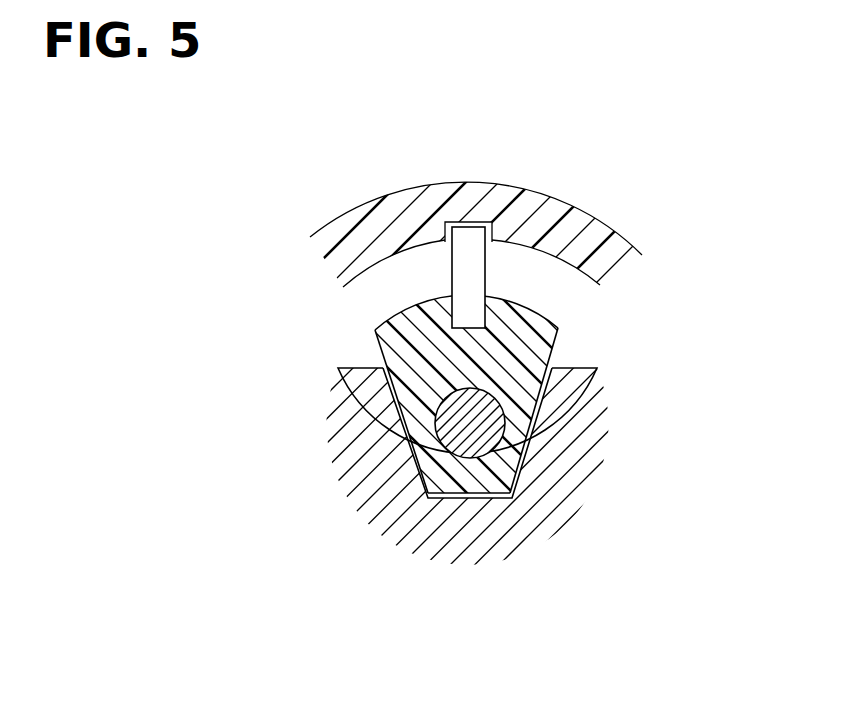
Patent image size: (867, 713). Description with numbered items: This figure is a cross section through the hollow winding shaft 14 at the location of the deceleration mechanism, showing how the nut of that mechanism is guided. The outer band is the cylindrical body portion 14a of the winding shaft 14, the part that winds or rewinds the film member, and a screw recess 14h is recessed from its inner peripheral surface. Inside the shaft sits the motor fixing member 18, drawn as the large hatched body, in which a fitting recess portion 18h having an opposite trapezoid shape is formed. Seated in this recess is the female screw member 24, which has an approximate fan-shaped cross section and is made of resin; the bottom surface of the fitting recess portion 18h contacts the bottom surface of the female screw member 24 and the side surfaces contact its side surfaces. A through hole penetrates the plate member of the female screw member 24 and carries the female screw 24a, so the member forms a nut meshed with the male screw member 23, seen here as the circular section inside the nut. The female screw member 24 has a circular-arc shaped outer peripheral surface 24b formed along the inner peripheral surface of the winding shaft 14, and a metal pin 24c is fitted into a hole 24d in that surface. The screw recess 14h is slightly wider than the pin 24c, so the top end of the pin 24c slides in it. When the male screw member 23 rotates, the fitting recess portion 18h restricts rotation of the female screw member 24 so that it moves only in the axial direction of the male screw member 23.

The winding shaft 14 is at (323, 221).
The cylindrical body portion 14a is at (392, 212).
The screw recess 14h is at (480, 250).
The motor fixing member 18 is at (587, 500).
The fitting recess portion 18h is at (535, 425).
The male screw member 23 is at (457, 437).
The female screw member 24 is at (507, 327).
The female screw 24a is at (548, 348).
The circular-arc shaped outer peripheral surface 24b is at (510, 296).
The pin 24c is at (478, 256).
The hole 24d is at (383, 338).